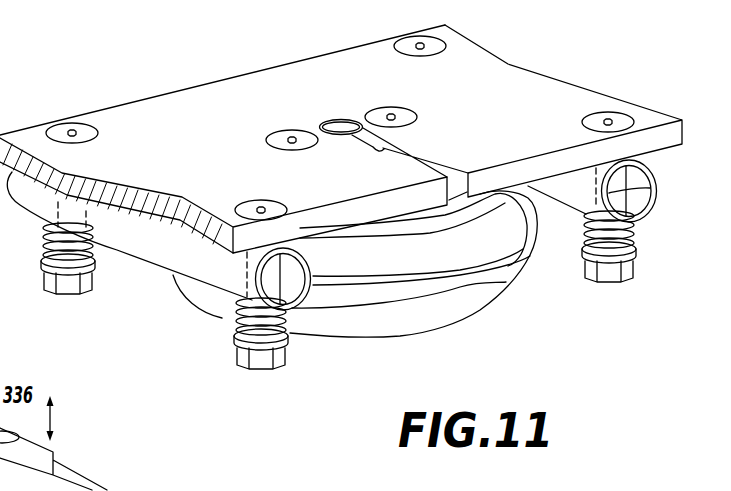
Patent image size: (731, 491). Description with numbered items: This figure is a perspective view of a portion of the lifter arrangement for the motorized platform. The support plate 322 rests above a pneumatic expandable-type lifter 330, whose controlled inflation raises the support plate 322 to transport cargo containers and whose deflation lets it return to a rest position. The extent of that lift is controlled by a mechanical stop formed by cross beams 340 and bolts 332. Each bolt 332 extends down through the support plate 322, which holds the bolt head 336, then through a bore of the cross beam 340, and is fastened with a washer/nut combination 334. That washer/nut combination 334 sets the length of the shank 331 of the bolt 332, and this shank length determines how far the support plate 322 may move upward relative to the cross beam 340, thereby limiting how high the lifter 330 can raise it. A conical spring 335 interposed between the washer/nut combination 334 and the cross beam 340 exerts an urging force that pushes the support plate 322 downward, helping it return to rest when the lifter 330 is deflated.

The support plate 322 is at (517, 104).
The bolt head 336 is at (623, 118).
The shank of bolt 331 is at (657, 181).
The bolt 332 is at (382, 290).
The conical spring 335 is at (630, 235).
The washer/nut combination 334 is at (612, 278).
The pneumatic expandable-type lifter 330 is at (453, 287).
The cross beam 340 is at (575, 193).